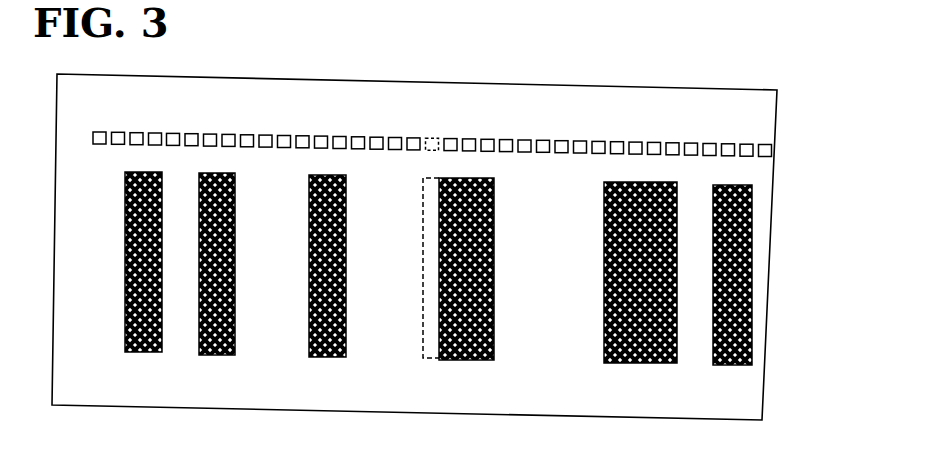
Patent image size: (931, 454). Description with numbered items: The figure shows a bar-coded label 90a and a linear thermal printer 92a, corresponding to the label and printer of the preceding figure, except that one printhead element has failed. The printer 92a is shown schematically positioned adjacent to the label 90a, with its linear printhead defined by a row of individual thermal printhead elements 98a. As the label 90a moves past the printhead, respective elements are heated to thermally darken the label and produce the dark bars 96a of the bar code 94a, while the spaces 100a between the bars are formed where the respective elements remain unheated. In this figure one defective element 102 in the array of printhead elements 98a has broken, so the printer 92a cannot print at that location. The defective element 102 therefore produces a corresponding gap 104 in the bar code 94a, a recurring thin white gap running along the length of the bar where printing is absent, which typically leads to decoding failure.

The bar-coded label 90a is at (779, 108).
The printer 92a is at (694, 133).
The bar code 94a is at (757, 350).
The bar 96a is at (472, 178).
The printhead elements 98a is at (155, 132).
The space 100a is at (383, 193).
The defective element 102 is at (430, 136).
The gap 104 is at (422, 245).